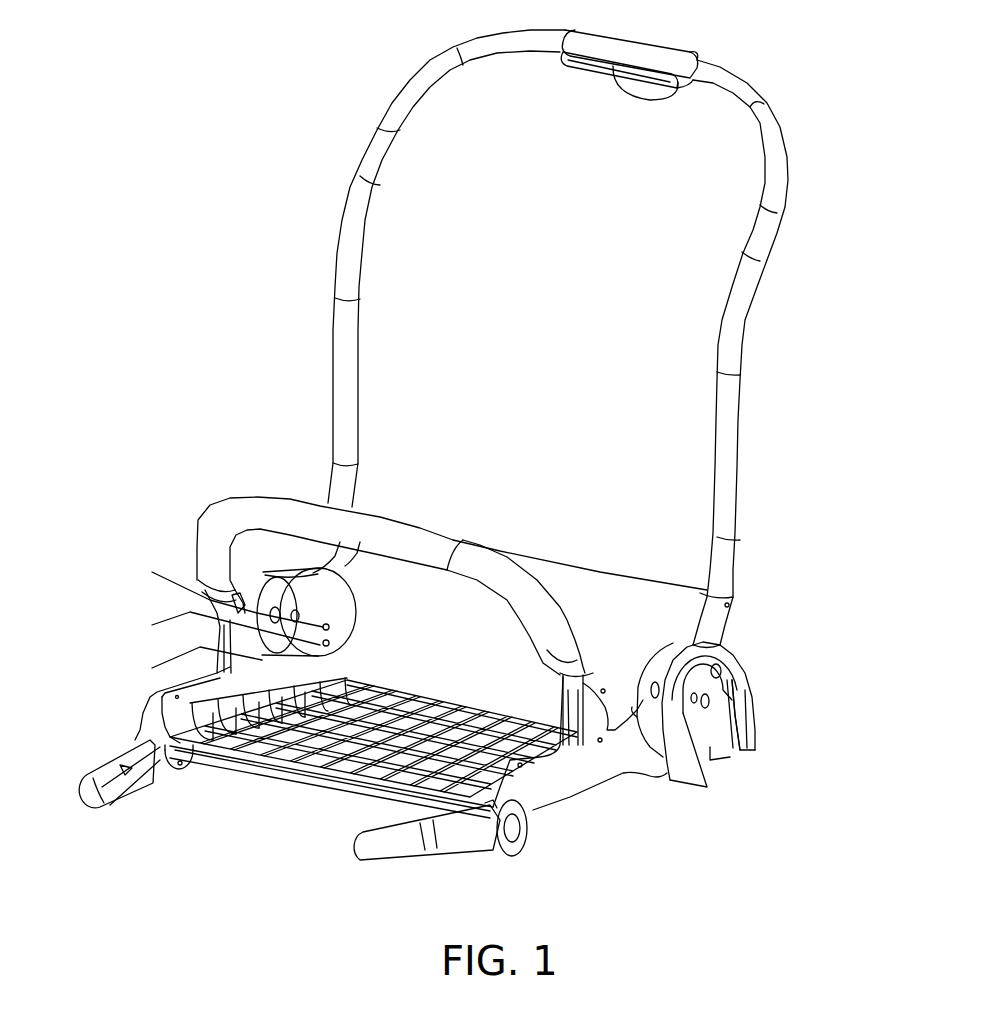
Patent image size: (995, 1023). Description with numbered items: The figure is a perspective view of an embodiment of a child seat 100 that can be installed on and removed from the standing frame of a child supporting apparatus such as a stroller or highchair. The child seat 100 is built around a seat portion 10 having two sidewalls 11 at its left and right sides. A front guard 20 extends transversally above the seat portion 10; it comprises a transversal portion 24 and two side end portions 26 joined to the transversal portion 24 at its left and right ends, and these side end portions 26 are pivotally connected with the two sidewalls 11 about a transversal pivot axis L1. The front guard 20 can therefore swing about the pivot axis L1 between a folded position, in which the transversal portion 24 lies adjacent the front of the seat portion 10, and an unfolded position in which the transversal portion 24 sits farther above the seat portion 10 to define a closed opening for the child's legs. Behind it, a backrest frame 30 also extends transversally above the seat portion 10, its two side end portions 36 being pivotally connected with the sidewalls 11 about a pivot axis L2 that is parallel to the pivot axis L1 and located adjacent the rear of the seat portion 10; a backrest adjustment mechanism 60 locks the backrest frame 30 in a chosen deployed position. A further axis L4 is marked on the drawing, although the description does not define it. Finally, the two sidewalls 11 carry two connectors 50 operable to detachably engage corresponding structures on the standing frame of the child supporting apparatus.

The child seat 100 is at (172, 172).
The seat portion 10 is at (284, 784).
The sidewalls 11 is at (156, 718).
The front guard 20 is at (241, 494).
The transversal portion 24 is at (379, 538).
The side end portions 26 is at (596, 621).
The backrest frame 30 is at (328, 349).
The side end portions 36 is at (313, 565).
The connectors 50 is at (758, 694).
The backrest adjustment mechanism 60 is at (258, 566).
The pivot axis L1 is at (191, 667).
The pivot axis L2 is at (222, 591).
The axis L4 is at (220, 627).